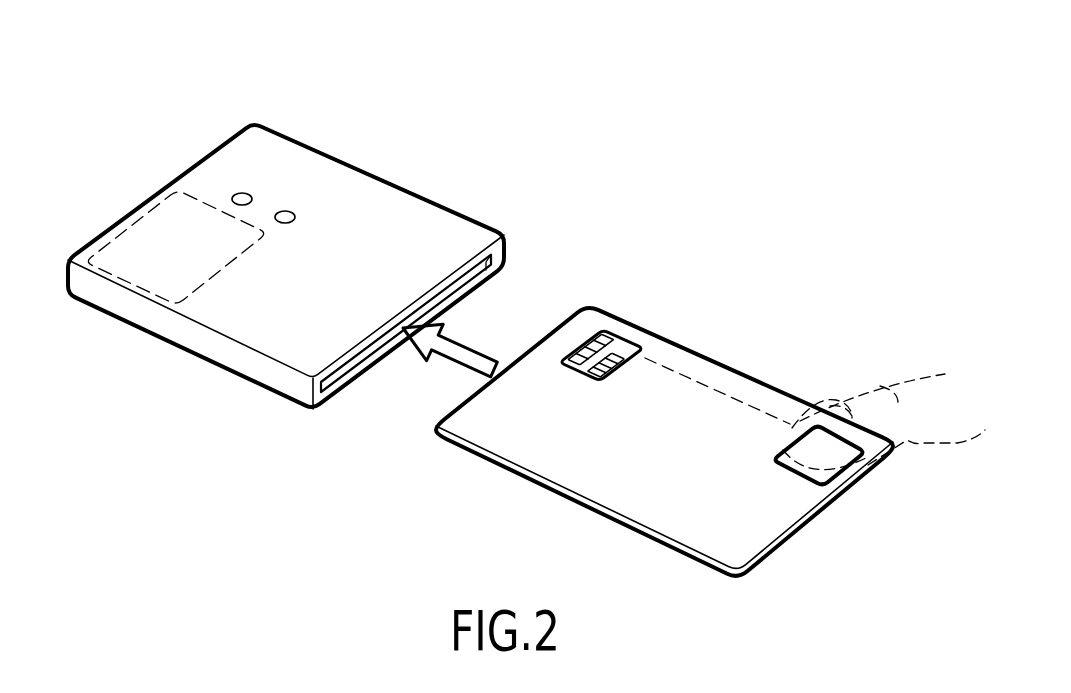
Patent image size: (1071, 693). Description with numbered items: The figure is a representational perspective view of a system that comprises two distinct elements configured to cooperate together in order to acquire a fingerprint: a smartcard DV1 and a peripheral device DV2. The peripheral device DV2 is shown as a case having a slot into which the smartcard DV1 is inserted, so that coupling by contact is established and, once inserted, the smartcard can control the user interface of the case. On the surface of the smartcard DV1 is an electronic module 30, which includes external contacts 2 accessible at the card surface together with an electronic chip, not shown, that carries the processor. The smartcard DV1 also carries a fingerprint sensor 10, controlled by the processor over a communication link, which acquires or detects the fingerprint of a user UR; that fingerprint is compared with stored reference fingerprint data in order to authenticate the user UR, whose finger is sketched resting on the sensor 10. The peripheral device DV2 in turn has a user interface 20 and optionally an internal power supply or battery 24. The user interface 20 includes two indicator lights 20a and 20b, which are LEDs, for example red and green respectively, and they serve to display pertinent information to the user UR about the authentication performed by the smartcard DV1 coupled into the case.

The user interface 20 is at (305, 135).
The indicator light 20a is at (243, 193).
The indicator light 20b is at (287, 211).
The internal power supply 24 is at (188, 260).
The peripheral device DV2 is at (420, 181).
The smartcard DV1 is at (727, 385).
The electronic module 30 is at (626, 333).
The external contacts 2 is at (600, 378).
The fingerprint sensor 10 is at (796, 448).
The user UR is at (915, 387).